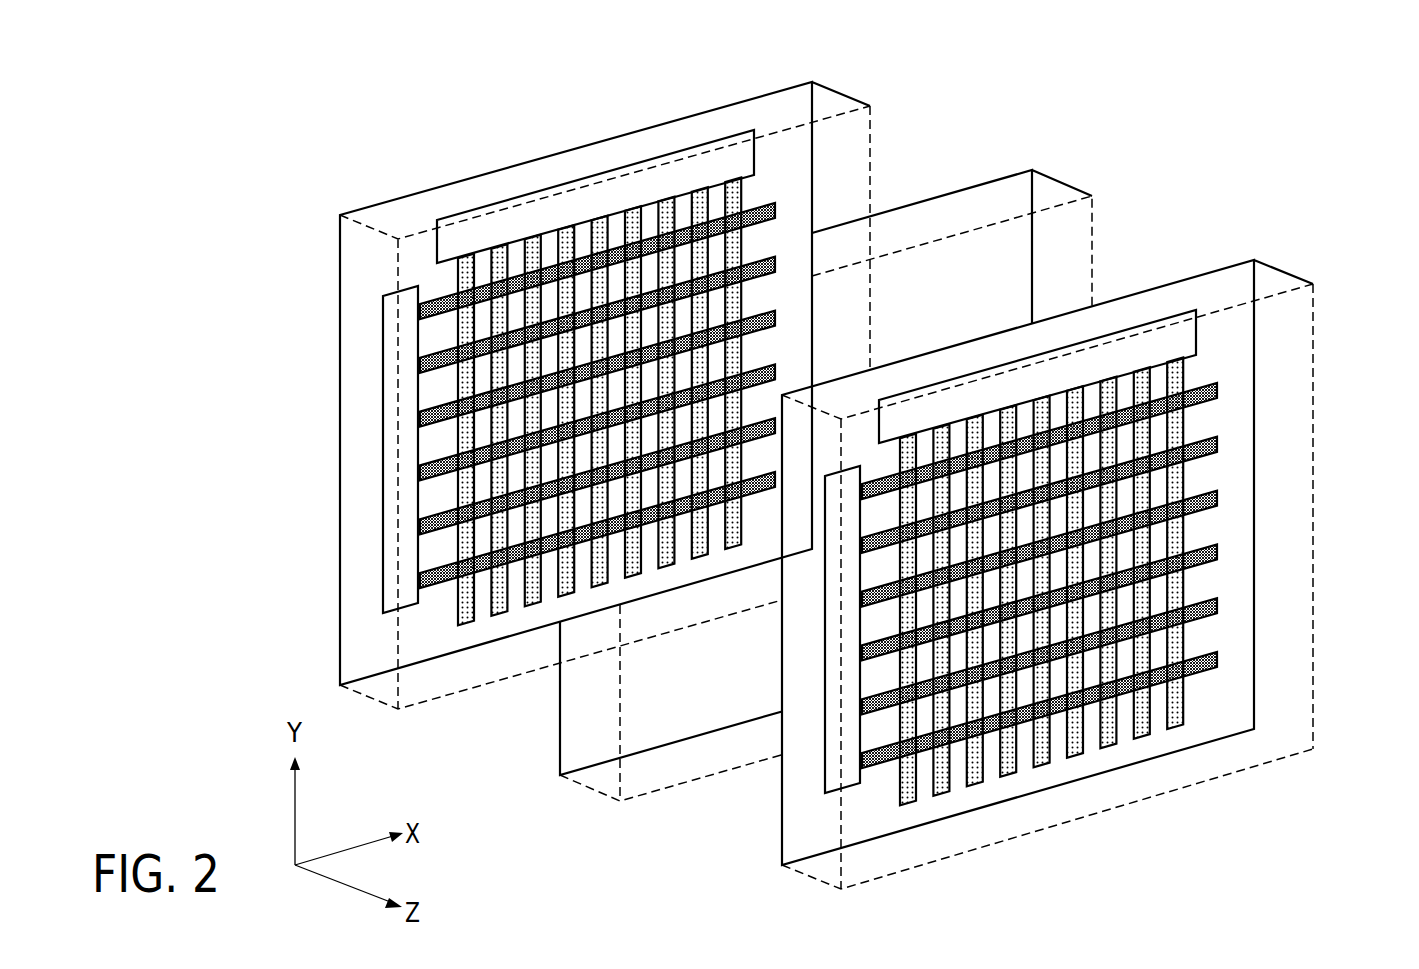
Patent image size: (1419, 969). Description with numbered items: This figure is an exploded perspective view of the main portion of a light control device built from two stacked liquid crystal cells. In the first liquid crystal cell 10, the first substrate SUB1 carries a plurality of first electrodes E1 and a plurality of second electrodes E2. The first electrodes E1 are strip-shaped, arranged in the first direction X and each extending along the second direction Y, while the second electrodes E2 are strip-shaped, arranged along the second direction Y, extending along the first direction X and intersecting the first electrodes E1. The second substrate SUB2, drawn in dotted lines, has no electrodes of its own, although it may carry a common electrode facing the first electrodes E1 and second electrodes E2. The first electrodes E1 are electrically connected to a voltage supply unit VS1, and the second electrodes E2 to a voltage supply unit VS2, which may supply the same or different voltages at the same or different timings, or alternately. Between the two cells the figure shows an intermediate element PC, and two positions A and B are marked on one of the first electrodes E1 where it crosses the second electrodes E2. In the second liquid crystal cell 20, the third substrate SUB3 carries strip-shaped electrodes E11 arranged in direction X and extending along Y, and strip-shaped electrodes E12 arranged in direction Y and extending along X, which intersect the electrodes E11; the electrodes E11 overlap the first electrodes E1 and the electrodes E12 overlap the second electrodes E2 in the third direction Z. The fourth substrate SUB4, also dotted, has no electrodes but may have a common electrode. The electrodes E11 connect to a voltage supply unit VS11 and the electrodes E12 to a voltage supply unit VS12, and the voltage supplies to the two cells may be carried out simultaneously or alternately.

The first liquid crystal cell 10 is at (614, 397).
The second liquid crystal cell 20 is at (1055, 566).
The pressure-sensitive layer PC is at (1104, 188).
The first substrate SUB1 is at (743, 98).
The second substrate SUB2 is at (833, 112).
The third substrate SUB3 is at (1190, 279).
The fourth substrate SUB4 is at (1278, 294).
The voltage supply unit VS1 is at (553, 185).
The voltage supply unit VS2 is at (382, 452).
The voltage supply unit VS11 is at (975, 373).
The voltage supply unit VS12 is at (825, 658).
The first electrodes E1 is at (533, 606).
The second electrodes E2 is at (777, 317).
The electrodes E11 is at (977, 786).
The electrodes E12 is at (1219, 497).
The intersection region A is at (468, 444).
The intersection region B is at (468, 554).